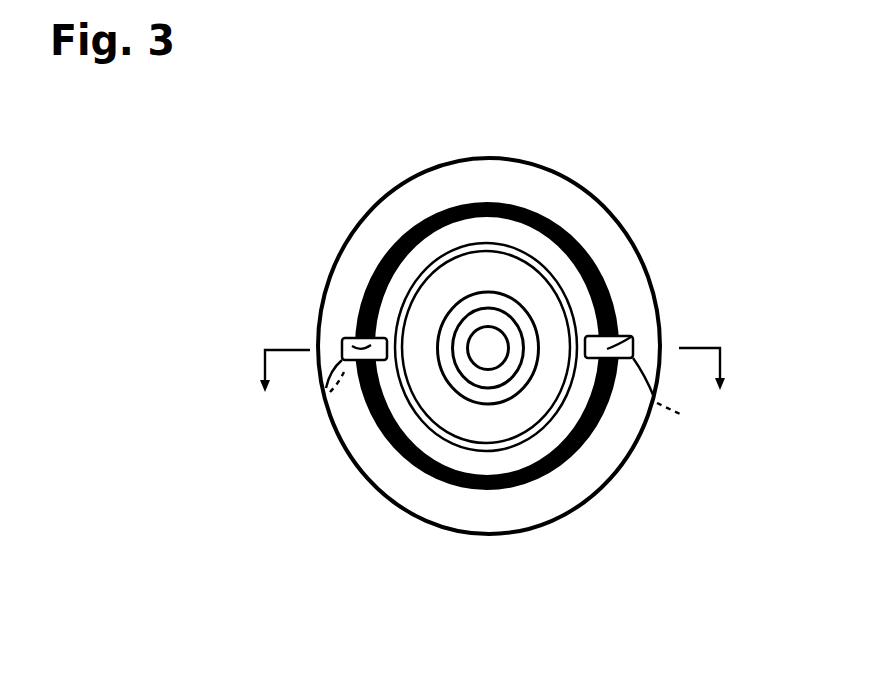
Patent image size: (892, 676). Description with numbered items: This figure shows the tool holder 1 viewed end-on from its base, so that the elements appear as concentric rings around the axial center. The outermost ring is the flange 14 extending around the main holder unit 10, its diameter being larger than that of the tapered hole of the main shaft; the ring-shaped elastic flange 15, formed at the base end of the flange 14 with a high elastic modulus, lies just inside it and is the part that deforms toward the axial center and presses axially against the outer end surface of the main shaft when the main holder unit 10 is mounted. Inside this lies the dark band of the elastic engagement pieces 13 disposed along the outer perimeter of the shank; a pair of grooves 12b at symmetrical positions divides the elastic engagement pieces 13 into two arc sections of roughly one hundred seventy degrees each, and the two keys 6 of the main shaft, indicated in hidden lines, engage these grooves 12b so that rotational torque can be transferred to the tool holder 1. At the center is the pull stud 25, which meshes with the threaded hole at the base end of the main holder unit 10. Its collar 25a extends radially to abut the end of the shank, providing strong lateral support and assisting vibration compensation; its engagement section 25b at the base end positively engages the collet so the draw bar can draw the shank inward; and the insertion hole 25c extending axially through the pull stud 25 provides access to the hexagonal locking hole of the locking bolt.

The tool holder 1 is at (626, 178).
The keys 6 is at (328, 390).
The main holder unit 10 is at (374, 194).
The grooves 12b is at (343, 338).
The elastic engagement pieces 13 is at (441, 210).
The flange 14 is at (530, 160).
The elastic flange 15 is at (350, 243).
The pull stud 25 is at (534, 449).
The collar 25a is at (542, 405).
The engagement section 25b is at (468, 395).
The insertion hole 25c is at (485, 367).